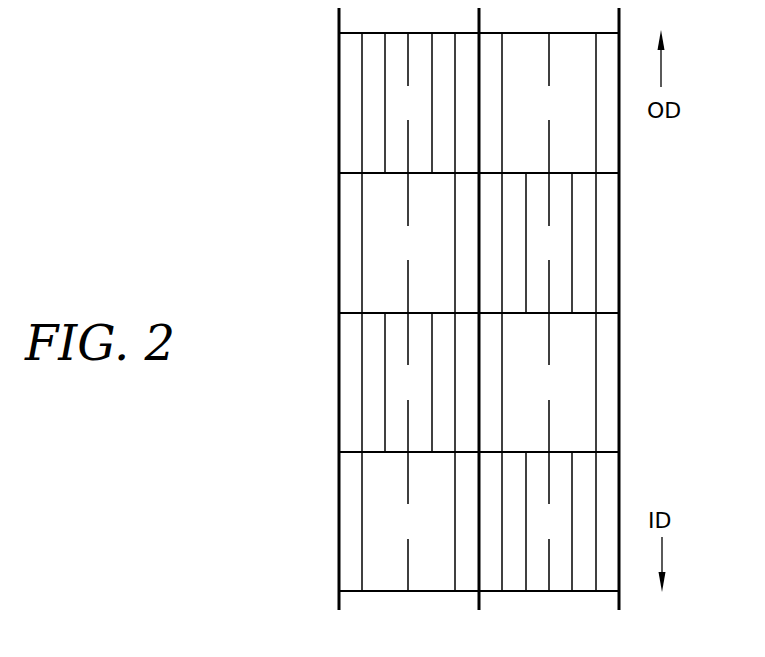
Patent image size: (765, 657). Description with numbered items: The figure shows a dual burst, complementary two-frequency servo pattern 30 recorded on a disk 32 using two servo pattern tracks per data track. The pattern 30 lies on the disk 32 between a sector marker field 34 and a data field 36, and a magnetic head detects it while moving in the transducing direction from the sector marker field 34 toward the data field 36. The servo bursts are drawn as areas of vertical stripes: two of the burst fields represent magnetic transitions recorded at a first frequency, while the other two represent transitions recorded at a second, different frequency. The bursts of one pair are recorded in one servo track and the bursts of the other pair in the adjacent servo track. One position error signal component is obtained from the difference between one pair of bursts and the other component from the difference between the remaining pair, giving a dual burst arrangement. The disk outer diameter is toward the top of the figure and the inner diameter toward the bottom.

The servo pattern 30 is at (339, 207).
The disk 32 is at (282, 117).
The sector marker field 34 is at (285, 329).
The data field 36 is at (708, 327).